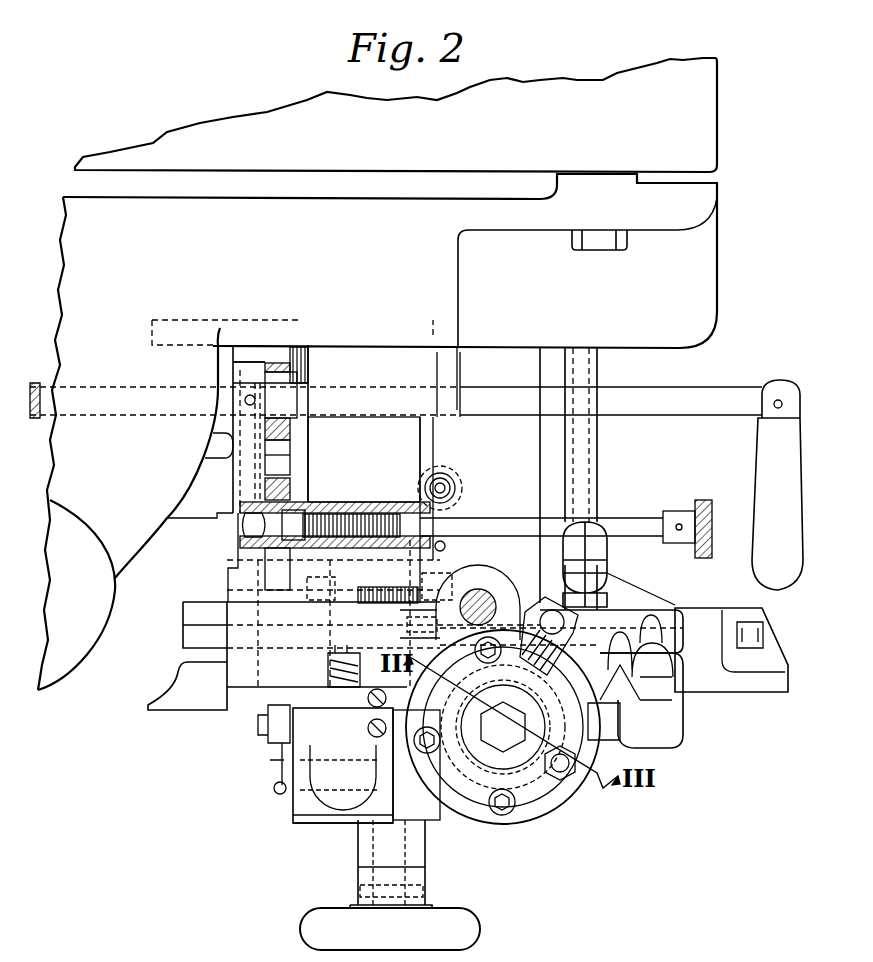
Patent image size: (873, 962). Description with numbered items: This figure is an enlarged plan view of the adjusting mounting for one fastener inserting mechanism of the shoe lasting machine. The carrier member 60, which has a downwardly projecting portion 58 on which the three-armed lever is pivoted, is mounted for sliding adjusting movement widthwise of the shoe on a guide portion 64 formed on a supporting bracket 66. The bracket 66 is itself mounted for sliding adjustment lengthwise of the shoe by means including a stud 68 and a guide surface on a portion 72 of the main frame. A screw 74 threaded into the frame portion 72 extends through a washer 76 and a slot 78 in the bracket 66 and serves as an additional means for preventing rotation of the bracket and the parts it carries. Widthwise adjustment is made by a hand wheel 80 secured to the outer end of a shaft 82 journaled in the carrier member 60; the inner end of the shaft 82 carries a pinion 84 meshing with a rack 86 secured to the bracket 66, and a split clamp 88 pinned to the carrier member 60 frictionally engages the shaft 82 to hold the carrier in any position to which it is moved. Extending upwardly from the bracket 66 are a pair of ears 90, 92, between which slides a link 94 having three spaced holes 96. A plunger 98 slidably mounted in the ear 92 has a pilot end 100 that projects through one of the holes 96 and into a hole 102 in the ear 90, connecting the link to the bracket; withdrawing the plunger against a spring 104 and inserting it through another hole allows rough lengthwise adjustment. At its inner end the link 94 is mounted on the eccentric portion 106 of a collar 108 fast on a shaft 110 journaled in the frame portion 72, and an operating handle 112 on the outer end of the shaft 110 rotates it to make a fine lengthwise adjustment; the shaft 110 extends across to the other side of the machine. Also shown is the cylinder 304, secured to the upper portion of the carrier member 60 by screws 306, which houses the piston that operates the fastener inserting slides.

The downwardly projecting portion 58 is at (768, 648).
The carrier member 60 is at (646, 607).
The guide portion 64 is at (182, 635).
The supporting bracket 66 is at (230, 576).
The stud 68 is at (308, 362).
The frame portion 72 is at (222, 256).
The screw 74 is at (450, 488).
The washer 76 is at (453, 500).
The slot 78 is at (447, 548).
The hand wheel 80 is at (481, 930).
The shaft 82 is at (408, 846).
The pinion 84 is at (375, 590).
The rack 86 is at (345, 588).
The split clamp 88 is at (430, 815).
The ear 90 is at (240, 507).
The ear 92 is at (308, 487).
The link 94 is at (292, 435).
The holes 96 is at (282, 463).
The plunger 98 is at (628, 519).
The pilot end 100 is at (240, 542).
The hole 102 is at (256, 525).
The spring 104 is at (335, 516).
The eccentric portion 106 is at (304, 372).
The collar 108 is at (250, 345).
The shaft 110 is at (640, 396).
The operating handle 112 is at (760, 468).
The cylinder 304 is at (535, 780).
The screws 306 is at (503, 815).